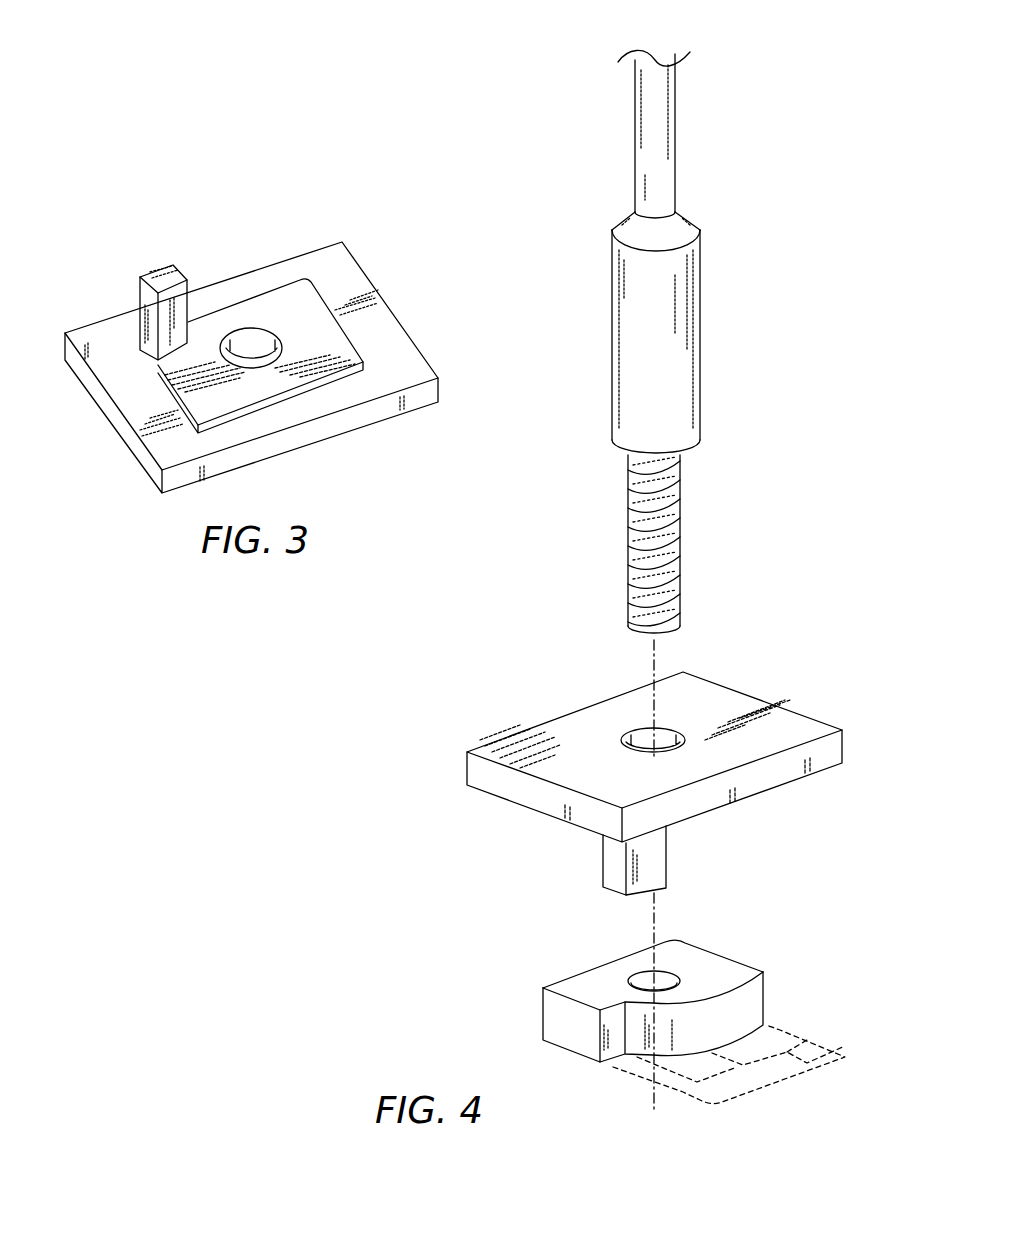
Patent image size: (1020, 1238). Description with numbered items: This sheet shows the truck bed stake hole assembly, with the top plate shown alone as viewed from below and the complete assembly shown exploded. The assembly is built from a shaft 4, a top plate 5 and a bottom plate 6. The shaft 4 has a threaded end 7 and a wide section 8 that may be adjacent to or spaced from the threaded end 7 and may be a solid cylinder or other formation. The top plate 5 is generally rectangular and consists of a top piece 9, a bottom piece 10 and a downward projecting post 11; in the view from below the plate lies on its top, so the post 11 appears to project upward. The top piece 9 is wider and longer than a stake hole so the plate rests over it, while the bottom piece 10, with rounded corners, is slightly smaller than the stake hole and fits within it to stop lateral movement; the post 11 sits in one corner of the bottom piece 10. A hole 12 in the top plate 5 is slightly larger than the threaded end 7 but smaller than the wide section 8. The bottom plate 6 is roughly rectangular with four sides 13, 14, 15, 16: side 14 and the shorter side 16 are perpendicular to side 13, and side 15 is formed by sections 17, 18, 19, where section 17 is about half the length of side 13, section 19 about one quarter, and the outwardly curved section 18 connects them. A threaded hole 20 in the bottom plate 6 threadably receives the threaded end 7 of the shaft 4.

In FIG. 4, the shaft 4 is at (673, 140).
In FIG. 4, the top plate 5 is at (590, 777).
In FIG. 4, the bottom plate 6 is at (635, 961).
In FIG. 4, the threaded end 7 is at (680, 528).
In FIG. 4, the wide section 8 is at (662, 303).
In FIG. 3, the top piece 9 is at (137, 397).
In FIG. 3, the bottom piece 10 is at (224, 392).
In FIG. 3, the post 11 is at (182, 262).
In FIG. 4, the post 11 is at (615, 865).
In FIG. 3, the hole 12 is at (248, 340).
In FIG. 4, the hole 12 is at (663, 737).
In FIG. 4, the side 13 is at (587, 968).
In FIG. 4, the side 14 is at (750, 963).
In FIG. 4, the side 15 is at (740, 1103).
In FIG. 4, the side 16 is at (560, 1013).
In FIG. 4, the section 17 is at (805, 1063).
In FIG. 4, the section 18 is at (732, 1077).
In FIG. 4, the section 19 is at (697, 1092).
In FIG. 4, the hole 20 is at (663, 983).